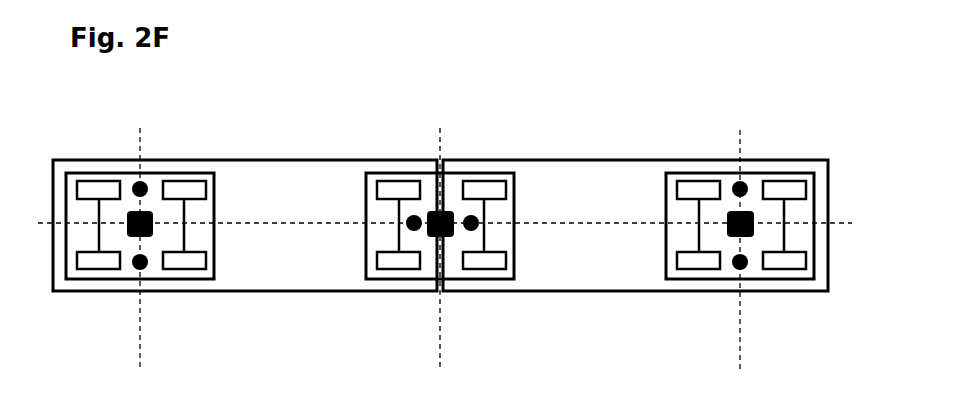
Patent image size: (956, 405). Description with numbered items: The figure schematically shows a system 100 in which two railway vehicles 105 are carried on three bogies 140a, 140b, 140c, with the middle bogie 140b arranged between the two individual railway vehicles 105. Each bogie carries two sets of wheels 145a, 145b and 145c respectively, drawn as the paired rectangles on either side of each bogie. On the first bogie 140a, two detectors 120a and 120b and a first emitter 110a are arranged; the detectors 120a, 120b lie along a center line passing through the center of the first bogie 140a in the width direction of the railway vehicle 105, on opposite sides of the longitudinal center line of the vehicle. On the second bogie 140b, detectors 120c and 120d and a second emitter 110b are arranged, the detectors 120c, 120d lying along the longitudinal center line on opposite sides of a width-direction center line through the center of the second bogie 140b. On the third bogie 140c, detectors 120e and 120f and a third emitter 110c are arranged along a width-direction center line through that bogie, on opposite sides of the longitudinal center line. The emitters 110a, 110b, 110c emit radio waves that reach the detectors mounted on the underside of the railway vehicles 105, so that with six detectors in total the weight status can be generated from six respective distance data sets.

The system 100 is at (263, 82).
The railway vehicle 105 is at (283, 160).
The first emitter 110a is at (128, 212).
The second emitter 110b is at (748, 210).
The third emitter 110c is at (457, 210).
The first detector 120a is at (138, 181).
The second detector 120b is at (140, 272).
The third detector 120c is at (418, 215).
The fourth detector 120d is at (473, 232).
The fifth detector 120e is at (738, 181).
The sixth detector 120f is at (740, 272).
The first bogie 140a is at (177, 175).
The second bogie 140b is at (383, 176).
The third bogie 140c is at (792, 176).
The set of wheels of first bogie 145a is at (97, 272).
The set of wheels of second bogie 145b is at (400, 272).
The set of wheels of third bogie 145c is at (698, 272).